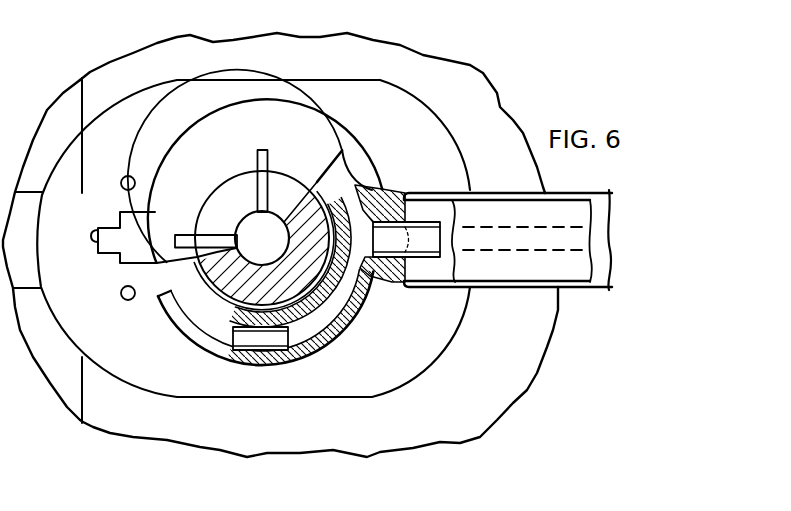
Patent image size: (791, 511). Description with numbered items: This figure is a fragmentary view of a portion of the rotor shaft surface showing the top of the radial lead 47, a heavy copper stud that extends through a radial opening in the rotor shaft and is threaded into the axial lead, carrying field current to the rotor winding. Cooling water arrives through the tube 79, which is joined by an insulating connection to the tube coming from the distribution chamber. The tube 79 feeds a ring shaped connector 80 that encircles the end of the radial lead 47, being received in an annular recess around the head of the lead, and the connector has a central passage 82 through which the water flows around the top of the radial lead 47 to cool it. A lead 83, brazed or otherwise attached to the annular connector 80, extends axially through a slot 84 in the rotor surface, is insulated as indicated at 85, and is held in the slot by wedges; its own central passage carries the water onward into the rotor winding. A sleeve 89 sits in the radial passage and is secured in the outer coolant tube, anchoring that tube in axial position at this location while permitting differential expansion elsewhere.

The radial lead 47 is at (310, 152).
The tube 79 is at (100, 228).
The ring shaped connector 80 is at (222, 353).
The central passage 82 is at (340, 307).
The lead 83 is at (405, 193).
The slot 84 is at (505, 192).
The insulation 85 is at (458, 288).
The sleeve 89 is at (447, 240).